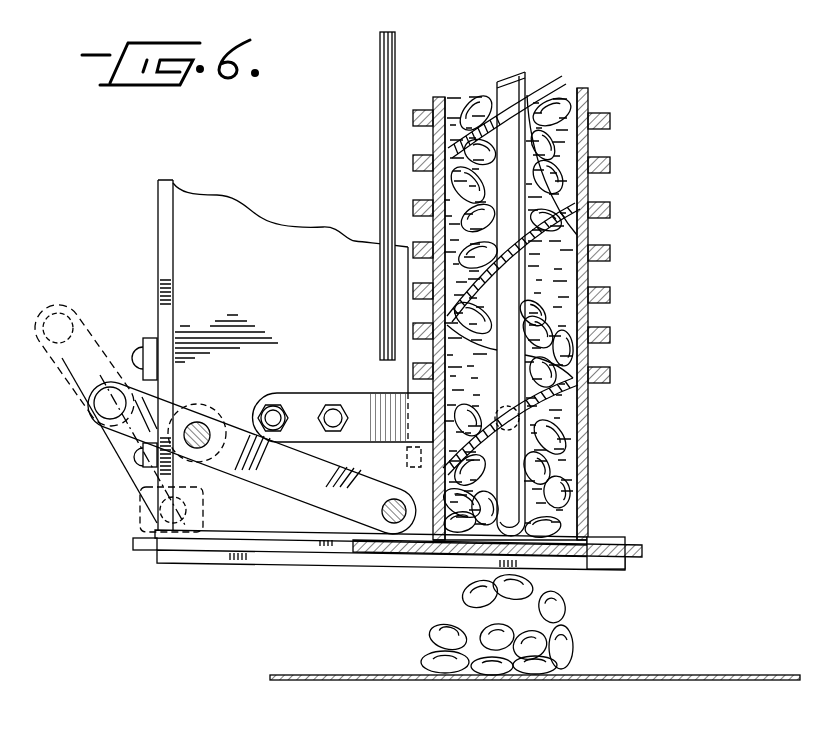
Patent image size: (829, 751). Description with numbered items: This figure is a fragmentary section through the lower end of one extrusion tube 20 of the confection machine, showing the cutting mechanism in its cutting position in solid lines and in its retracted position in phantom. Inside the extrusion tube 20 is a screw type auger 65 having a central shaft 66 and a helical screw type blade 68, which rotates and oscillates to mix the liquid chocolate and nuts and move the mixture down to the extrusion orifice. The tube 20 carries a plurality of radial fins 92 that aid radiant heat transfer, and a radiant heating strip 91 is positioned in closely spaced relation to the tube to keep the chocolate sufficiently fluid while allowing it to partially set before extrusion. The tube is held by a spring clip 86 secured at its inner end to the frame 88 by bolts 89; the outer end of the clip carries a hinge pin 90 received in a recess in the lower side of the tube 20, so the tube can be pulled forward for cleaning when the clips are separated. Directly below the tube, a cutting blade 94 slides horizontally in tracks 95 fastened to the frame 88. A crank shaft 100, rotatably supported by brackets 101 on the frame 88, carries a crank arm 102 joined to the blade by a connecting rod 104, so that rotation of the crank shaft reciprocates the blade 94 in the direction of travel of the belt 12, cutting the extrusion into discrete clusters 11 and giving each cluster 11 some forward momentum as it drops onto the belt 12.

The solid filled cluster type confection 11 is at (573, 620).
The moving belt 12 is at (650, 677).
The extrusion tube 20 is at (587, 470).
The screw type auger 65 is at (505, 82).
The central shaft 66 is at (600, 185).
The helical screw type blade 68 is at (565, 400).
The spring clip 86 is at (360, 403).
The frame 88 is at (160, 232).
The bolt 89 is at (330, 412).
The hinge pin 90 is at (507, 410).
The radiant heating strip 91 is at (380, 155).
The radial fin 92 is at (607, 160).
The cutting blade 94 is at (470, 555).
The track 95 is at (193, 565).
The crank shaft 100 is at (103, 410).
The bracket 101 is at (153, 343).
The crank arm 102 is at (87, 317).
The connecting rod 104 is at (127, 480).